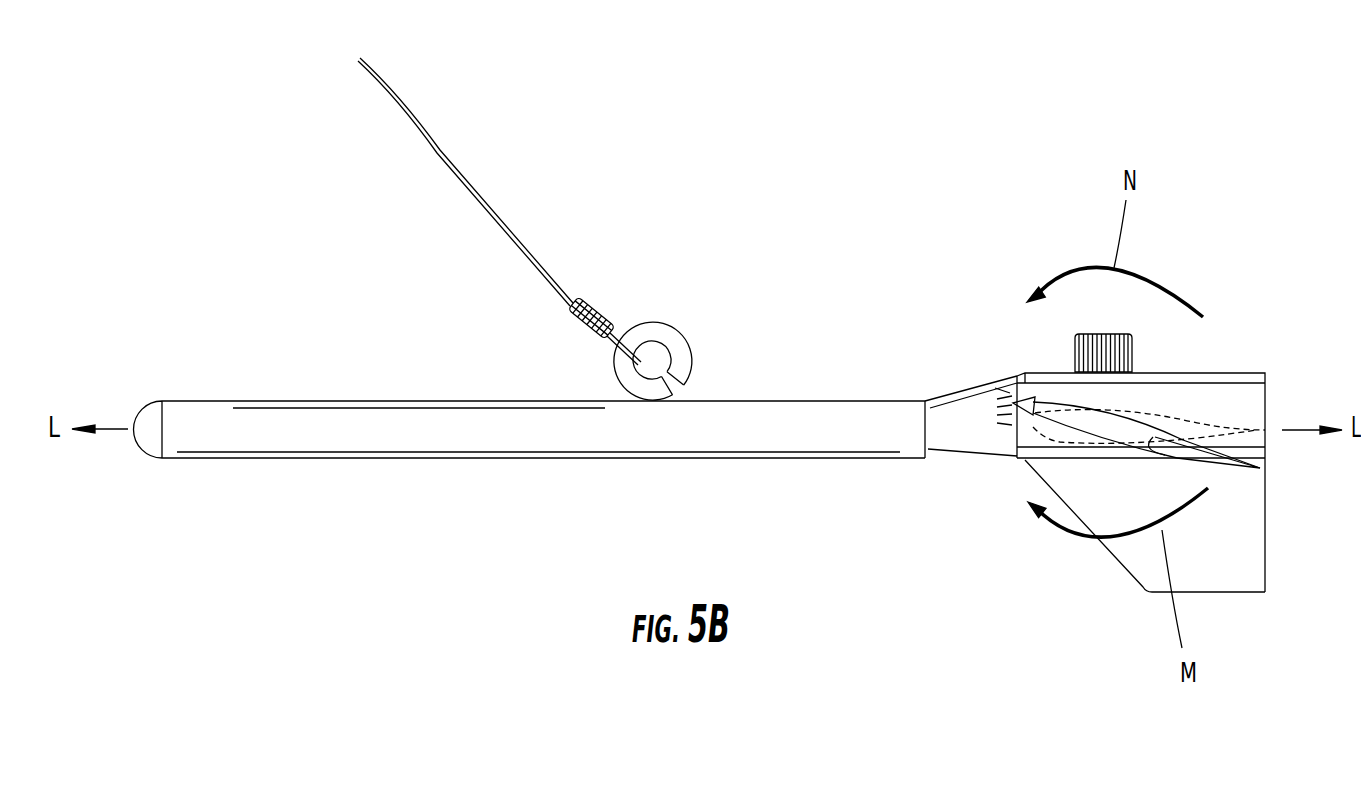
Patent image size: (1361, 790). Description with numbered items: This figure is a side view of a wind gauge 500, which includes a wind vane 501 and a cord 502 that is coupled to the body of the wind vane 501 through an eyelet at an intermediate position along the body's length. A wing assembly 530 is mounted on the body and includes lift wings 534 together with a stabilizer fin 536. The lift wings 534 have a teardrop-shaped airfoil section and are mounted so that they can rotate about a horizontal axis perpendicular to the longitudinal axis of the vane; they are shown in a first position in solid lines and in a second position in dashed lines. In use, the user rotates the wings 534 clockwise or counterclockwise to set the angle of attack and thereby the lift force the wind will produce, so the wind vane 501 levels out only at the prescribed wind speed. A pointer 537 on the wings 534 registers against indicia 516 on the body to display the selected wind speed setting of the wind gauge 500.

The wind gauge 500 is at (902, 183).
The wind vane 501 is at (769, 235).
The cord 502 is at (497, 193).
The indicia 516 is at (998, 372).
The wing assembly 530 is at (1246, 259).
The lift wings 534 is at (1142, 412).
The stabilizer fin 536 is at (1236, 570).
The pointer 537 is at (1020, 400).